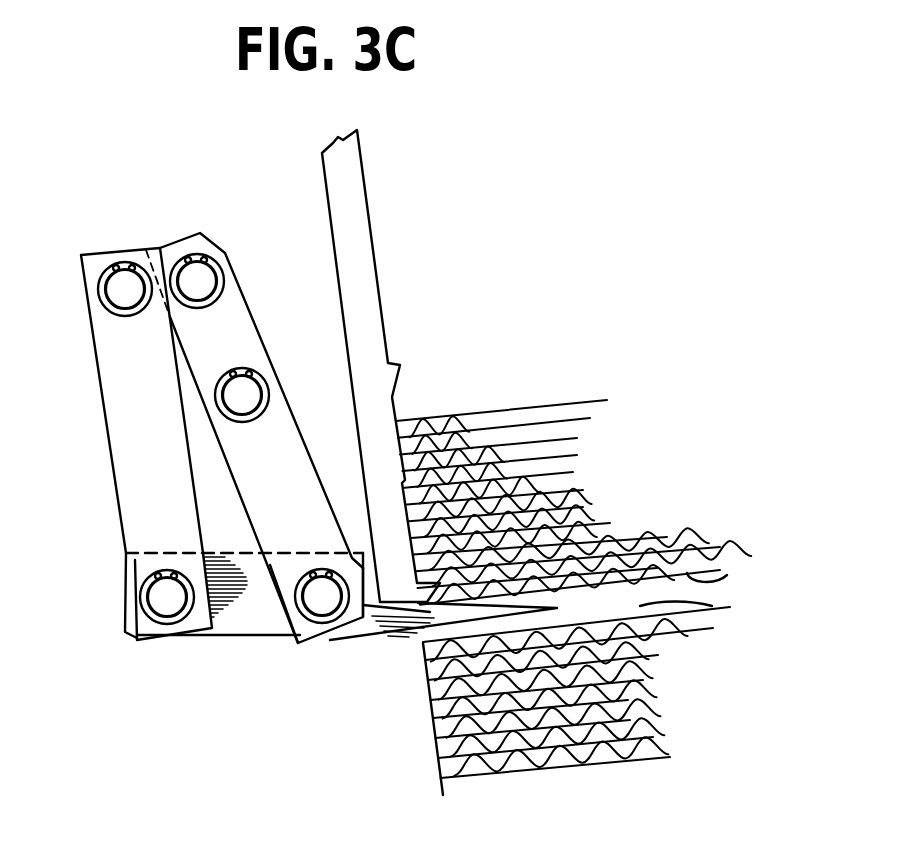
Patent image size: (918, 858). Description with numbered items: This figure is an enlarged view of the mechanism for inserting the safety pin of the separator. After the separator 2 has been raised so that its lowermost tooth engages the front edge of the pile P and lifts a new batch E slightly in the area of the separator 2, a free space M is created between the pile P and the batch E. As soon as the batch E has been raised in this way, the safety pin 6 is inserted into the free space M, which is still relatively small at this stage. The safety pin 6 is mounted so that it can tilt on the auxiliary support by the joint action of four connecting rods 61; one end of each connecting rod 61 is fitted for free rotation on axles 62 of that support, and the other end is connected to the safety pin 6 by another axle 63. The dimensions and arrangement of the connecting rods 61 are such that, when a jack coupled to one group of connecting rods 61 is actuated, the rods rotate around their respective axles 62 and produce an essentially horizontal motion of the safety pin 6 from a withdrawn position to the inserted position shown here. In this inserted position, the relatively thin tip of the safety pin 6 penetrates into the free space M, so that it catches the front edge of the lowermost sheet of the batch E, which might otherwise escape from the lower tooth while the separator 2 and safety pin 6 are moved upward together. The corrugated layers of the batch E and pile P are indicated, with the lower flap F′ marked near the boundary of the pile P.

The separator 2 is at (362, 227).
The safety pin 6 is at (238, 608).
The connecting rods 61 is at (128, 430).
The axles 62 is at (120, 289).
The axle 63 is at (163, 600).
The batch E is at (537, 389).
The pile P is at (610, 817).
The free space M is at (600, 598).
The lower flap F′ is at (670, 613).